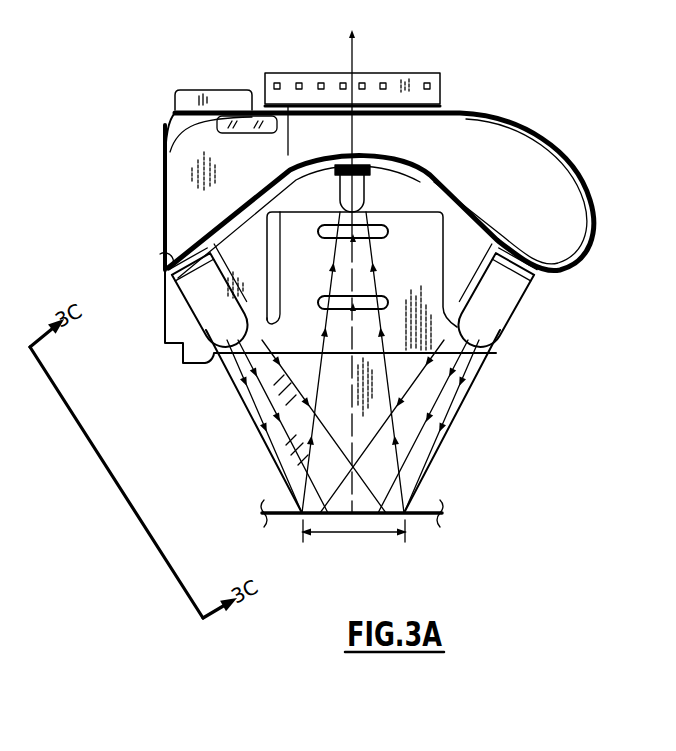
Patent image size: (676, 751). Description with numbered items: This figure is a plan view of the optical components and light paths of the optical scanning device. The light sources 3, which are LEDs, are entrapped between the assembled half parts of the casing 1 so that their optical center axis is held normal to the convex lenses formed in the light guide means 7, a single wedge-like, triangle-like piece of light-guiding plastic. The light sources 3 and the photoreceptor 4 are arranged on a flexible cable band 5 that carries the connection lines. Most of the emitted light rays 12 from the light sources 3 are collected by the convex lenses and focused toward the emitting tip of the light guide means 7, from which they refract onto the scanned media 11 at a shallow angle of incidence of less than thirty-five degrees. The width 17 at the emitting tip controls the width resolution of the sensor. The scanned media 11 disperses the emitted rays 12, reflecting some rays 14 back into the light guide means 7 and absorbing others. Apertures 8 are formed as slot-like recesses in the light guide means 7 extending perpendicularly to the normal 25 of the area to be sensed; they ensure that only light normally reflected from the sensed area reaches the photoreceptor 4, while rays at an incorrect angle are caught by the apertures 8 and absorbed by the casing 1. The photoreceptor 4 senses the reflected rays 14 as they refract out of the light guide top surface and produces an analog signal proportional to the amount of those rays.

The casing 1 is at (202, 90).
The normal of the area to be sensed 25 is at (353, 56).
The photoreceptor 4 is at (360, 198).
The flexible cable band 5 is at (586, 243).
The light guide means 7 is at (424, 244).
The apertures 8 is at (326, 239).
The light sources 3 is at (207, 304).
The reflected rays 14 is at (317, 377).
The emitted light rays 12 is at (413, 441).
The scanned media surface 11 is at (281, 502).
The width at the emitting tip 17 is at (367, 533).